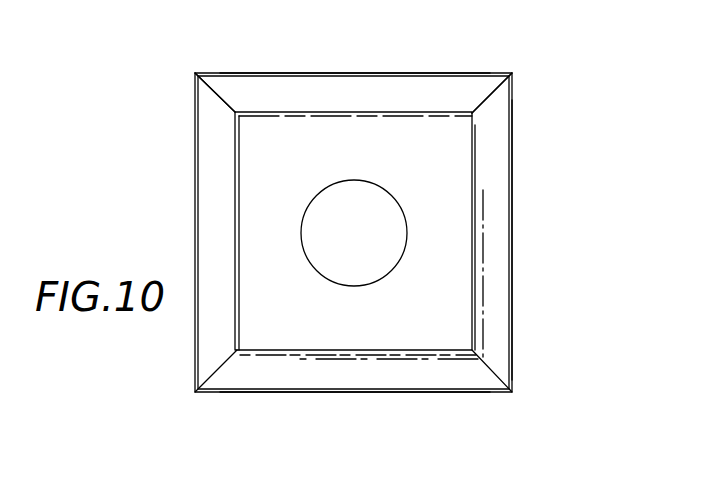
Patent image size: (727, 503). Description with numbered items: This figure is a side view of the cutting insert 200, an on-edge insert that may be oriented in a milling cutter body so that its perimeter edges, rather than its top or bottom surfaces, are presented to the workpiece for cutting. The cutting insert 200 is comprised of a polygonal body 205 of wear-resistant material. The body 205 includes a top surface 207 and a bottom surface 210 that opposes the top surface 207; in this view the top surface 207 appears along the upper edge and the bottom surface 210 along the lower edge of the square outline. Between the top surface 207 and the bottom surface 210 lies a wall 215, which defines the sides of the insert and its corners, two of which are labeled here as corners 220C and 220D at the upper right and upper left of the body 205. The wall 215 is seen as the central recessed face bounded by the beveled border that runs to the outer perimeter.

The cutting insert 200 is at (182, 162).
The polygonal body 205 is at (513, 242).
The top surface 207 is at (332, 72).
The bottom surface 210 is at (328, 393).
The wall 215 is at (453, 158).
The corner 220C is at (512, 73).
The corner 220D is at (195, 73).